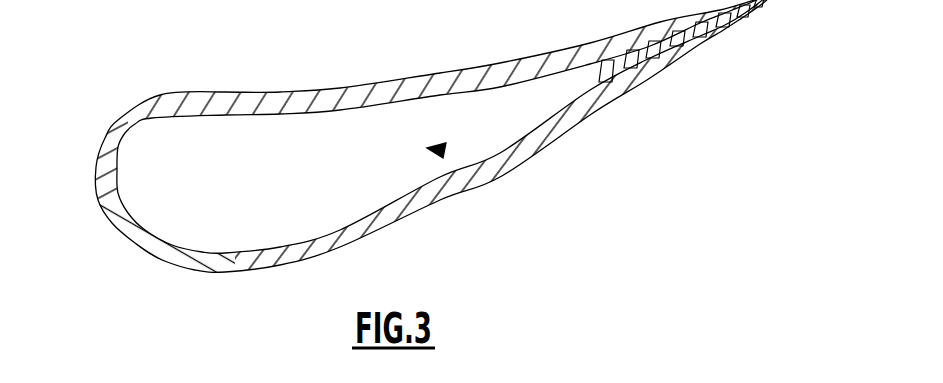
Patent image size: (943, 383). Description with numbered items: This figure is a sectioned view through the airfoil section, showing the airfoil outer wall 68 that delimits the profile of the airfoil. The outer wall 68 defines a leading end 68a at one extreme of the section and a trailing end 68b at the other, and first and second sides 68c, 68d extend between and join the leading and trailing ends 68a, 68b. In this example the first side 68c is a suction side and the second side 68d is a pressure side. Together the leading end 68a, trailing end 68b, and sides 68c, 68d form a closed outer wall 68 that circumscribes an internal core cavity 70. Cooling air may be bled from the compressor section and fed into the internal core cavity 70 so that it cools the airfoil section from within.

The airfoil outer wall 68 is at (429, 144).
The leading end 68a is at (99, 147).
The trailing end 68b is at (764, 6).
The first side 68c is at (358, 236).
The second side 68d is at (342, 90).
The internal core cavity 70 is at (443, 151).